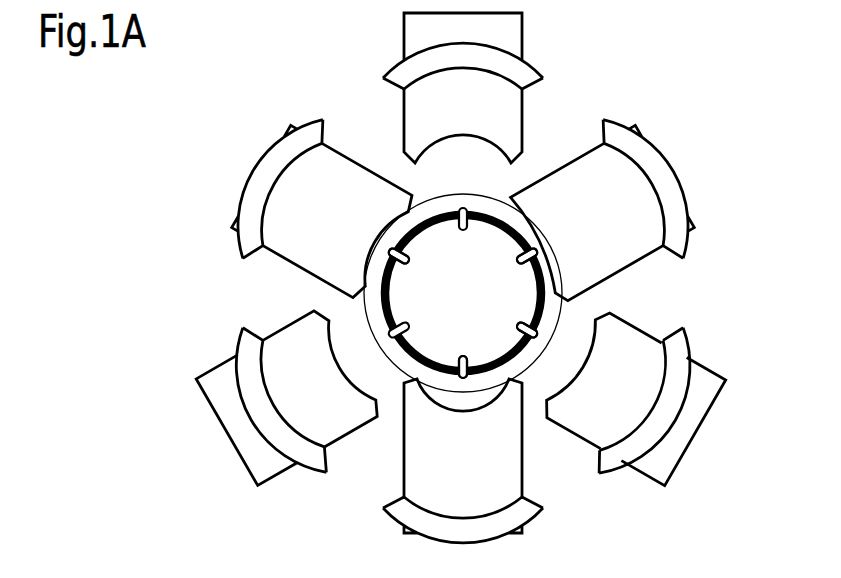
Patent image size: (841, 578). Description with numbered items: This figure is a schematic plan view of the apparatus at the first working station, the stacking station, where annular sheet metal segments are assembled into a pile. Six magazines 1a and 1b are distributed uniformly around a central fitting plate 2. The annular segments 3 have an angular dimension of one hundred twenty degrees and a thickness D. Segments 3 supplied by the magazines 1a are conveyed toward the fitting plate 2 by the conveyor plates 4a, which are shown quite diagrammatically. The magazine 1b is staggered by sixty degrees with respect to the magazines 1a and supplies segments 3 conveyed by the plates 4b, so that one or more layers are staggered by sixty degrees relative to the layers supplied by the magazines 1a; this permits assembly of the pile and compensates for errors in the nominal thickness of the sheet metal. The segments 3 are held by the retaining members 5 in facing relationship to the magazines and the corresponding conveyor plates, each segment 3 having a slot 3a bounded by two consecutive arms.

The magazine 1a is at (662, 163).
The magazine 1b is at (505, 62).
The fitting plate 2 is at (462, 250).
The annular segment 3 is at (422, 222).
The slot 3a is at (477, 208).
The conveyor plate 4a is at (572, 172).
The conveyor plate 4b is at (505, 105).
The retaining member 5 is at (524, 330).